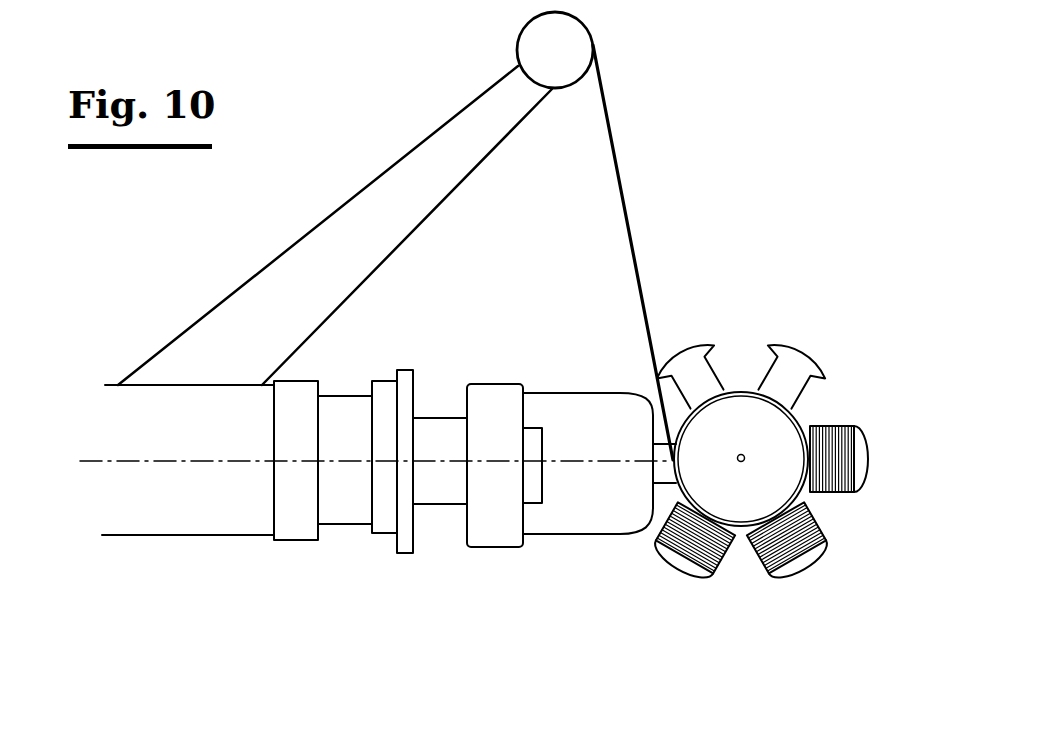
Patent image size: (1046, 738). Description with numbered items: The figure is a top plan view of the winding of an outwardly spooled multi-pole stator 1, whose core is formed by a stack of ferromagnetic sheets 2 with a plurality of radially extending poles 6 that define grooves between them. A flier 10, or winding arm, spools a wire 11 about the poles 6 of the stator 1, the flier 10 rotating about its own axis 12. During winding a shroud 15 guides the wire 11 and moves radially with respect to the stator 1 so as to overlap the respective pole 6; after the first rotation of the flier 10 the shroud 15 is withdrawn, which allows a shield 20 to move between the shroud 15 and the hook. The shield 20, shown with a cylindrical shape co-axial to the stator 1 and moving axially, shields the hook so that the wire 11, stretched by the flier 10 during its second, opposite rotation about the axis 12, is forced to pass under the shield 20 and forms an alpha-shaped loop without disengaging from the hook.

The multi-pole stator 1 is at (803, 439).
The stack of ferromagnetic sheets 2 is at (800, 553).
The pole 6 is at (862, 452).
The flier 10 is at (357, 222).
The wire 11 is at (623, 190).
The axis of the flier 12 is at (108, 463).
The shroud 15 is at (508, 588).
The shield 20 is at (742, 400).